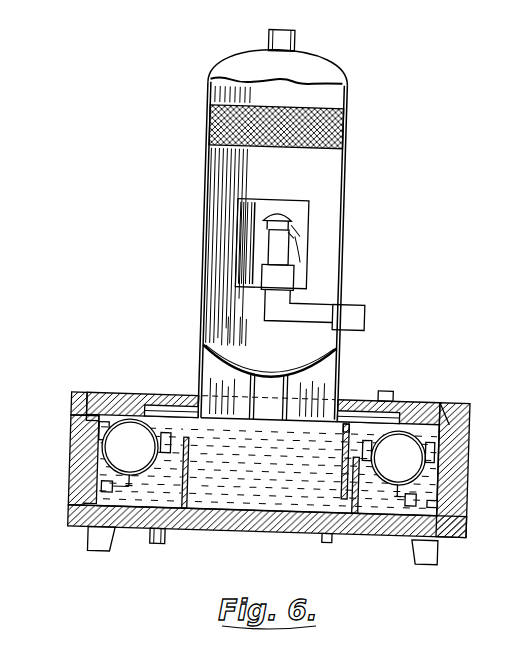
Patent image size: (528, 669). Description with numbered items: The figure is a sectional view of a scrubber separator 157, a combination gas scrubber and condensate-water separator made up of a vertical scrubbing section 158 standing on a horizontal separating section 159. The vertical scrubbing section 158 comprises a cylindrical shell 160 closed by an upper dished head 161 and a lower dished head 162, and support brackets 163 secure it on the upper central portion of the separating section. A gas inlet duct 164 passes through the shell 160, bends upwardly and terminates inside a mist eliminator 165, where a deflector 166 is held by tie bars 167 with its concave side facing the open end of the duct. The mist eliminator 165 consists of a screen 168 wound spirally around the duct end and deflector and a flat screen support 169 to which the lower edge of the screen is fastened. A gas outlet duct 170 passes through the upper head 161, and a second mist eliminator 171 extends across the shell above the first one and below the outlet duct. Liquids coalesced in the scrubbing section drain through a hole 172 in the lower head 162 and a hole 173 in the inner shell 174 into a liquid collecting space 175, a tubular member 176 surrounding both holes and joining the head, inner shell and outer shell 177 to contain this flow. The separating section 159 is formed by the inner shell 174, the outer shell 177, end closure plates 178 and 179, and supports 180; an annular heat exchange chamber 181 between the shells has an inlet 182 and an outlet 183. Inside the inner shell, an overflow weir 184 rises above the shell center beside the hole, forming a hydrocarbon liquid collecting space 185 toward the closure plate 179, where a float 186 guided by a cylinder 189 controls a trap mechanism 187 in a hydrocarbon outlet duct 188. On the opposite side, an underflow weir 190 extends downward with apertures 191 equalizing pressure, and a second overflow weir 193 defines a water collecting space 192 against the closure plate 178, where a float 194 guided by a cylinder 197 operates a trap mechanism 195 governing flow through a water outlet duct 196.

The scrubber separator 157 is at (197, 258).
The vertical scrubbing section 158 is at (199, 153).
The horizontal separating section 159 is at (152, 398).
The cylindrical shell 160 is at (338, 161).
The upper dished head 161 is at (250, 57).
The lower dished head 162 is at (340, 353).
The support brackets 163 is at (200, 374).
The gas inlet duct 164 is at (346, 303).
The mist eliminator 165 is at (304, 219).
The deflector 166 is at (266, 213).
The tie bars 167 is at (283, 232).
The screen 168 is at (233, 214).
The screen support 169 is at (247, 288).
The gas outlet duct 170 is at (284, 40).
The mist eliminator 171 is at (338, 116).
The hole 172 is at (271, 375).
The hole 173 is at (265, 421).
The inner shell 174 is at (237, 522).
The liquid collecting space 175 is at (313, 468).
The tubular member 176 is at (245, 396).
The outer shell 177 is at (331, 537).
The end closure plate 178 is at (450, 398).
The end closure plate 179 is at (88, 398).
The supports 180 is at (93, 548).
The annular heat exchange chamber 181 is at (280, 526).
The inlet 182 is at (169, 540).
The outlet 183 is at (393, 391).
The overflow weir 184 is at (190, 489).
The hydrocarbon liquid collecting space 185 is at (141, 464).
The float 186 is at (136, 452).
The trap mechanism 187 is at (99, 483).
The hydrocarbon outlet duct 188 is at (104, 500).
The cylinder 189 is at (86, 424).
The underflow weir 190 is at (344, 463).
The apertures 191 is at (344, 443).
The water collecting space 192 is at (392, 497).
The second overflow weir 193 is at (355, 505).
The float 194 is at (398, 464).
The trap mechanism 195 is at (462, 481).
The water outlet duct 196 is at (470, 497).
The cylinder 197 is at (470, 421).